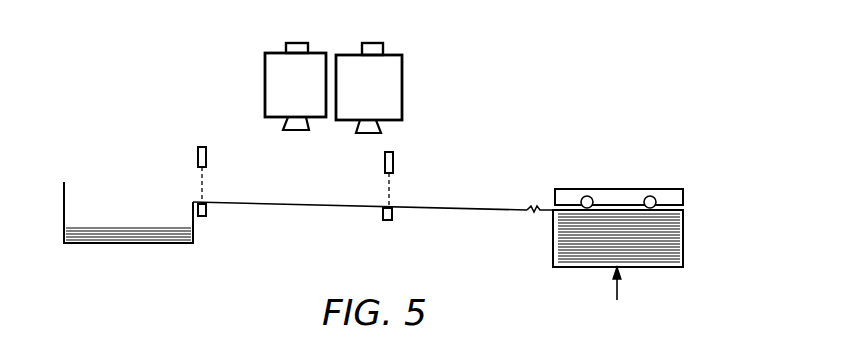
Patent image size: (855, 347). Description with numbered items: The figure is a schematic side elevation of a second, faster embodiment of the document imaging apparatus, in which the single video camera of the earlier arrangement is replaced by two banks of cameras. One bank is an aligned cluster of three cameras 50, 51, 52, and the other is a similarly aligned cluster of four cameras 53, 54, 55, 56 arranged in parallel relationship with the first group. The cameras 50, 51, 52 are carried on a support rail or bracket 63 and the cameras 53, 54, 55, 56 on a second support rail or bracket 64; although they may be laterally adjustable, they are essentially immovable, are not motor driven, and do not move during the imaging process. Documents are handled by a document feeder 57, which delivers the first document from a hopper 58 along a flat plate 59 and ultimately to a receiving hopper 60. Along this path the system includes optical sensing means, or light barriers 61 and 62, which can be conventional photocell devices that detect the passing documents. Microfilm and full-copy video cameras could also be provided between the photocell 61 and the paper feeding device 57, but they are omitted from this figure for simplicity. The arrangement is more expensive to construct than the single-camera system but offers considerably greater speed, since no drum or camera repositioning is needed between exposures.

The camera 50 is at (229, 86).
The camera 51 is at (229, 86).
The camera 52 is at (263, 75).
The camera 53 is at (463, 88).
The camera 54 is at (463, 88).
The camera 55 is at (463, 88).
The camera 56 is at (402, 78).
The document feeder 57 is at (608, 190).
The hopper 58 is at (683, 238).
The flat plate 59 is at (353, 205).
The receiving hopper 60 is at (112, 243).
The light barrier 61 is at (393, 162).
The light barrier 62 is at (196, 155).
The support rail 63 is at (296, 43).
The support rail 64 is at (372, 43).